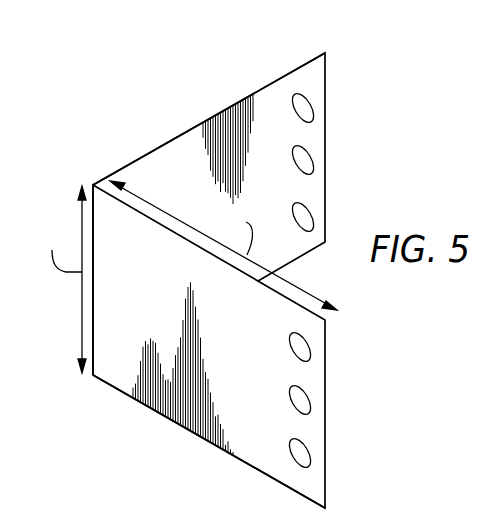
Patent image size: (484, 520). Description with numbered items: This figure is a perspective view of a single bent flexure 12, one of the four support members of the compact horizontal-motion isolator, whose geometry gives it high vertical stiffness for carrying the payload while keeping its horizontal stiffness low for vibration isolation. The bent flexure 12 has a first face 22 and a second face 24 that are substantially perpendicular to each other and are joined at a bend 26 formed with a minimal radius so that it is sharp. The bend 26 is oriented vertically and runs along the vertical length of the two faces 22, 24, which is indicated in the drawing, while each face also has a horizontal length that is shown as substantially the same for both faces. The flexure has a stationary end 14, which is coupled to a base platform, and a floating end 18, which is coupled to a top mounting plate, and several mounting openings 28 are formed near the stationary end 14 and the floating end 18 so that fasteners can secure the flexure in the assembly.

The bent flexure 12 is at (253, 266).
The stationary end 14 is at (305, 427).
The floating end 18 is at (325, 73).
The first face 22 is at (120, 363).
The second face 24 is at (160, 167).
The bend 26 is at (92, 316).
The mounting openings 28 is at (308, 92).